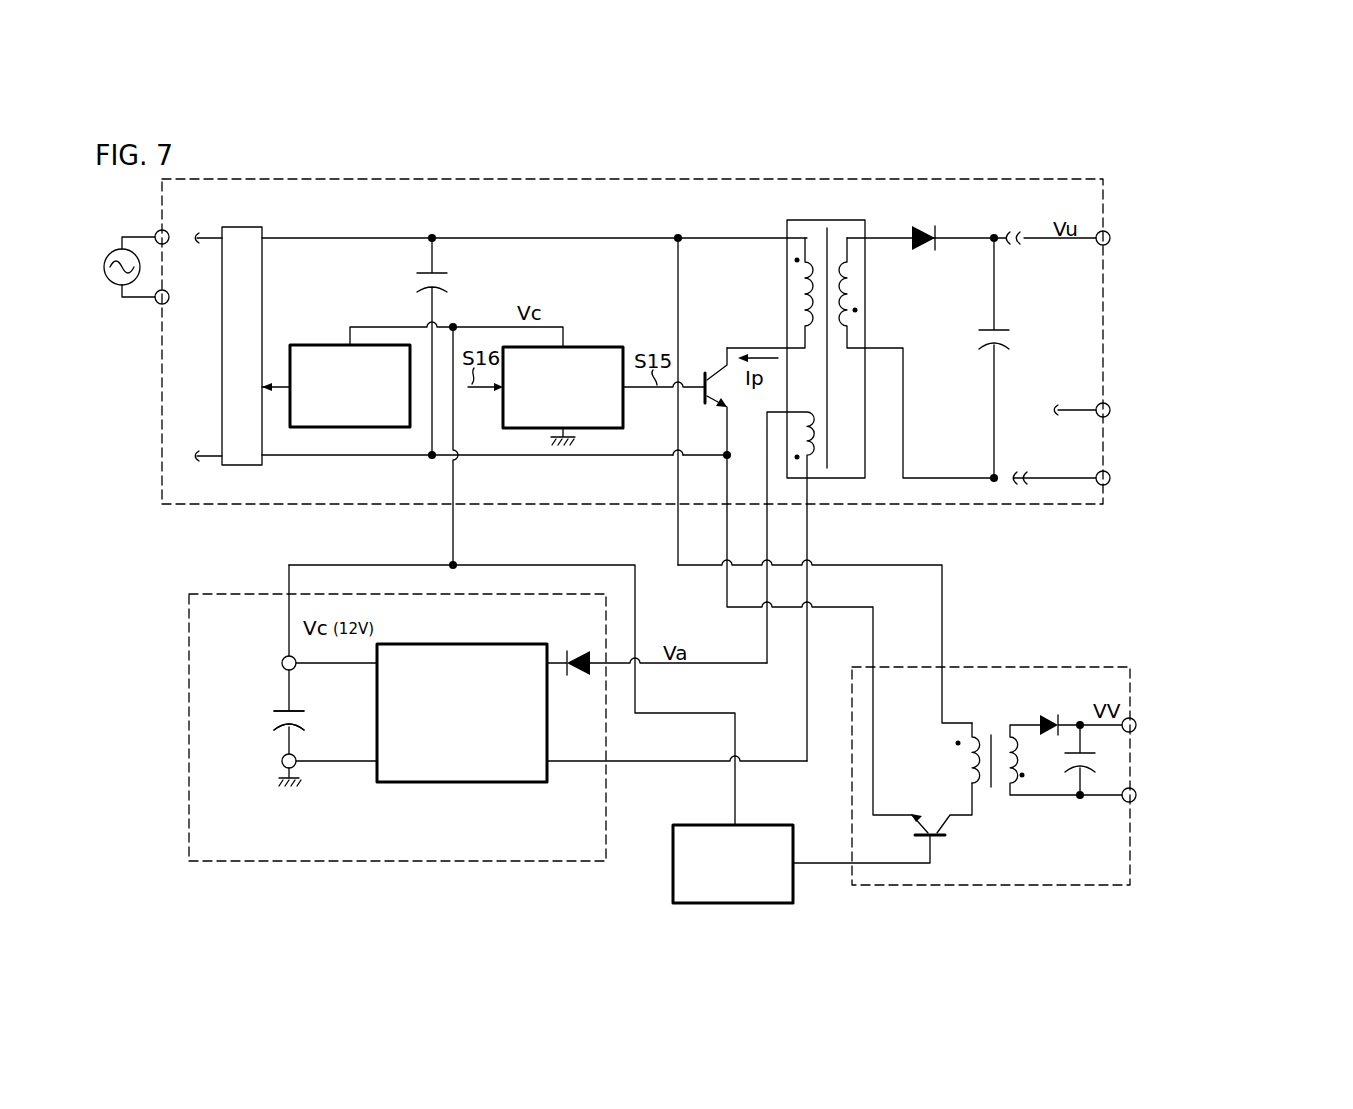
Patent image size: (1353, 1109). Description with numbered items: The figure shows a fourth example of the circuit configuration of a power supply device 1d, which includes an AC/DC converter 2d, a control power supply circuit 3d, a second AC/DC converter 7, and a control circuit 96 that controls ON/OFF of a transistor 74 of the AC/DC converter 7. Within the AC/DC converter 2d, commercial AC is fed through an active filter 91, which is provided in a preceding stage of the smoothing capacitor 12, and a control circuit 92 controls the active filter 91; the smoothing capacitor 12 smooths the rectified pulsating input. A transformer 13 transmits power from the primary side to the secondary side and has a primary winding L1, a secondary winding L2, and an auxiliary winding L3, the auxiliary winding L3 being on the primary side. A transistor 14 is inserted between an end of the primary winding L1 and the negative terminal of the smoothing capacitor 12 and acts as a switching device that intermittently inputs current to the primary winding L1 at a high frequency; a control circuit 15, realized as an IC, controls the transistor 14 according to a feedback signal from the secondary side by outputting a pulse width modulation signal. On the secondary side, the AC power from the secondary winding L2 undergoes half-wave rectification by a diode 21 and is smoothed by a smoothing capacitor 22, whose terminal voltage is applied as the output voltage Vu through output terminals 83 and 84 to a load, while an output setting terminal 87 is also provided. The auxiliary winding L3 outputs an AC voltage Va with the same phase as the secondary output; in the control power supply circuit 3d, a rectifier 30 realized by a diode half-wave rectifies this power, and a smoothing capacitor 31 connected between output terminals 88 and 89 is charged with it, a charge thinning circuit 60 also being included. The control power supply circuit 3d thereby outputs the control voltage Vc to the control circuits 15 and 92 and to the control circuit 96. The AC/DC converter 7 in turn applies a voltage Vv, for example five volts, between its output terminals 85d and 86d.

The power supply device 1d is at (1037, 608).
The AC/DC converter 2d is at (162, 365).
The control power supply circuit 3d is at (189, 712).
The AC/DC converter 7 is at (852, 838).
The smoothing capacitor 12 is at (444, 276).
The transformer 13 is at (860, 490).
The transistor 14 is at (715, 404).
The control circuit 15 is at (595, 347).
The diode 21 is at (922, 253).
The smoothing capacitor 22 is at (986, 330).
The rectifier 30 is at (579, 652).
The smoothing capacitor 31 is at (306, 704).
The charge thinning circuit 60 is at (430, 644).
The transistor 74 is at (943, 826).
The output terminal 83 is at (1108, 232).
The output terminal 84 is at (1108, 472).
The output setting terminal 87 is at (1108, 404).
The output terminal 88 is at (282, 671).
The output terminal 89 is at (282, 771).
The active filter 91 is at (262, 272).
The control circuit 92 is at (320, 345).
The control circuit 96 is at (753, 825).
The output terminal 85d is at (1134, 719).
The output terminal 86d is at (1134, 789).
The primary winding L1 is at (794, 287).
The secondary winding L2 is at (857, 287).
The auxiliary winding L3 is at (818, 432).